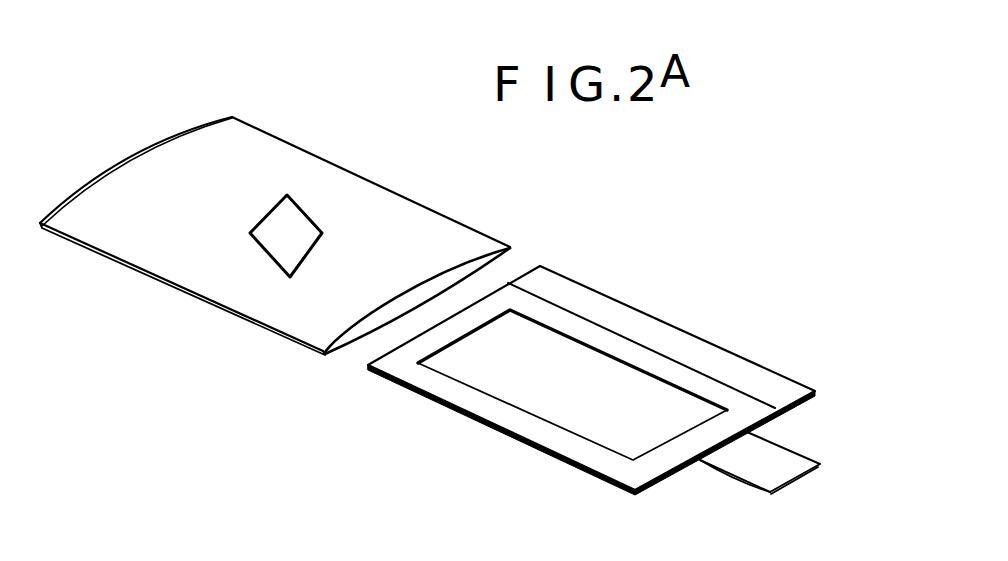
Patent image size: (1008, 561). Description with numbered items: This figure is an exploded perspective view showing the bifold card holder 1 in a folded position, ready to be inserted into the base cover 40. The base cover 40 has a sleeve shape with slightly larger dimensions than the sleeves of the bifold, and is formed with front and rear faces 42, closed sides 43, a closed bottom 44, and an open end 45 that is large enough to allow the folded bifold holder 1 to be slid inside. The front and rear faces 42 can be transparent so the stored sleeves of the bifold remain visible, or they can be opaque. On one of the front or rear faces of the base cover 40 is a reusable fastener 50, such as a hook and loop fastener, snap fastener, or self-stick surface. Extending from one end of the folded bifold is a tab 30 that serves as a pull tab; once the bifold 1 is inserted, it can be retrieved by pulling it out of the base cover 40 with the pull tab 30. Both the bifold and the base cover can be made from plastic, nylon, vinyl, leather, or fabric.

The bifold card holder 1 is at (767, 272).
The tab 30 is at (792, 463).
The base cover 40 is at (337, 95).
The front and rear faces 42 is at (220, 237).
The closed sides 43 is at (375, 187).
The closed bottom 44 is at (123, 163).
The open end 45 is at (360, 332).
The reusable fastener 50 is at (280, 243).